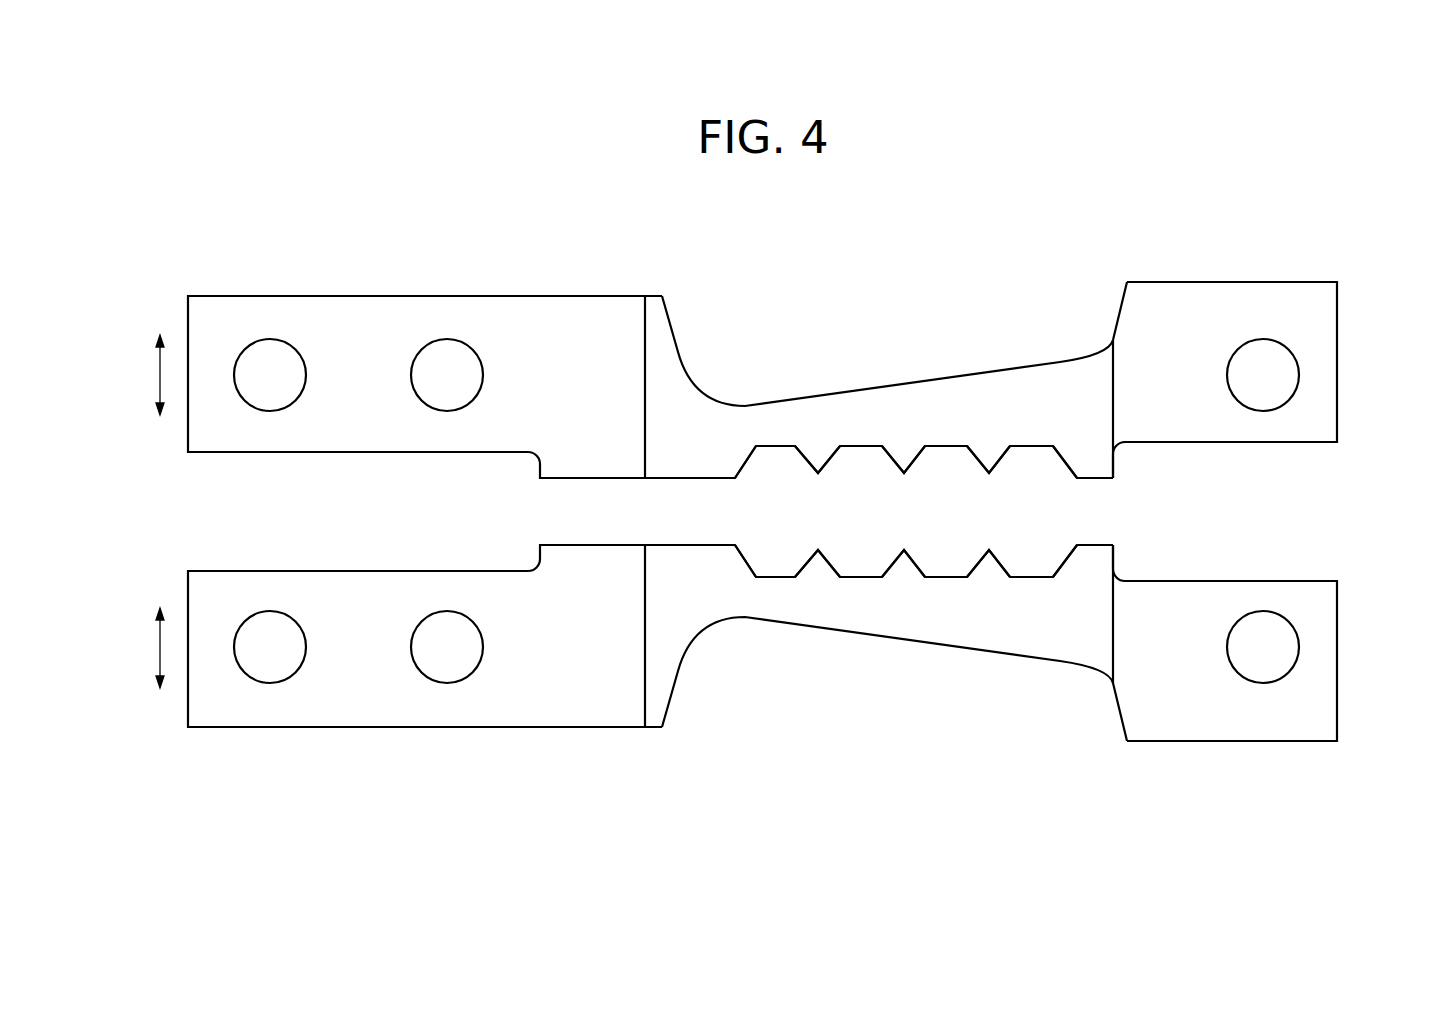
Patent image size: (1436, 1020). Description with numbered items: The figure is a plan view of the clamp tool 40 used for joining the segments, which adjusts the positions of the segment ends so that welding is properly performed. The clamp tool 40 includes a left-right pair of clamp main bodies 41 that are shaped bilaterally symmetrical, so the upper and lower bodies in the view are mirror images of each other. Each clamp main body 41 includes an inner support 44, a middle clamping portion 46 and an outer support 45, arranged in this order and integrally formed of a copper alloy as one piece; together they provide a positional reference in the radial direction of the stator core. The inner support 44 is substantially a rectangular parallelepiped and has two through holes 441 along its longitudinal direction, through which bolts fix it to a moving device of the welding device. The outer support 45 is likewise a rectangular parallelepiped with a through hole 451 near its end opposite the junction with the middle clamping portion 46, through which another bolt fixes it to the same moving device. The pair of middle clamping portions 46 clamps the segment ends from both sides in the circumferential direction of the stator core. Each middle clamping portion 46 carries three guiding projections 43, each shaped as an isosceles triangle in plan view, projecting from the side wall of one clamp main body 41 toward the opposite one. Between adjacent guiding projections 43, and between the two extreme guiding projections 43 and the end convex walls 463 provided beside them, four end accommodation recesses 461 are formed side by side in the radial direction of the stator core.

The clamp tool 40 is at (240, 112).
The clamp main body 41 is at (1007, 356).
The guiding projection 43 is at (820, 453).
The inner support 44 is at (355, 310).
The through hole 441 is at (283, 385).
The outer support 45 is at (1247, 308).
The through hole 451 is at (1289, 372).
The middle clamping portion 46 is at (850, 389).
The end accommodation recess 461 is at (1028, 450).
The end convex wall 463 is at (745, 463).